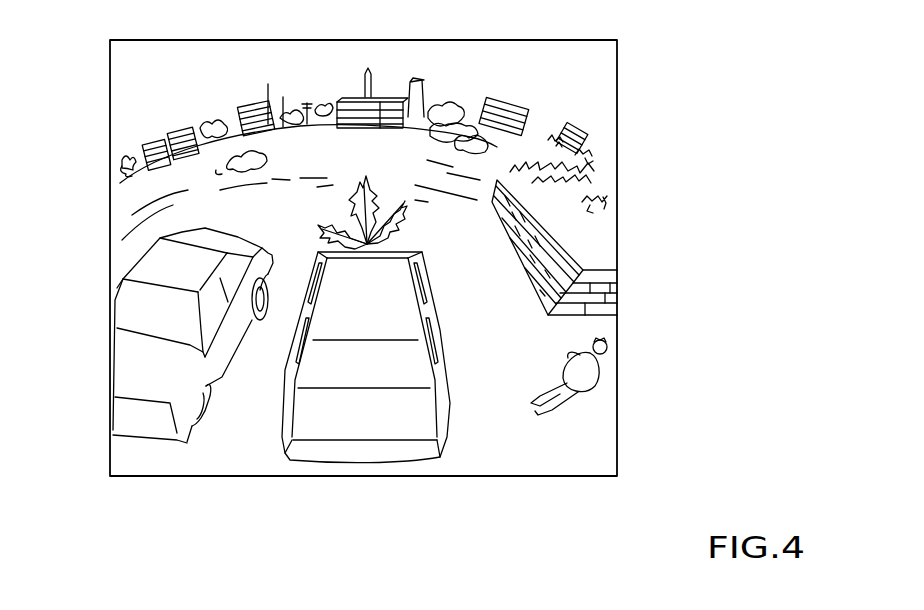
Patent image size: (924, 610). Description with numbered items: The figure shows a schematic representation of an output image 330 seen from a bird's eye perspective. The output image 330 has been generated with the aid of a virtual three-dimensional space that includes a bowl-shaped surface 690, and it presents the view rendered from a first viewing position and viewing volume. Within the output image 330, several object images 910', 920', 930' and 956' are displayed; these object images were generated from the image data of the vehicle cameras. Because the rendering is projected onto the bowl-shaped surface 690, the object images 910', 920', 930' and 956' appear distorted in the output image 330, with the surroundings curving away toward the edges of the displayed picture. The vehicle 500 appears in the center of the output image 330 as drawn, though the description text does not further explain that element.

The output image 330 is at (577, 87).
The object image 910' is at (365, 194).
The object image 920' is at (605, 247).
The object image 930' is at (625, 376).
The object image 956' is at (154, 340).
The own vehicle 500 is at (275, 425).
The surface 690 is at (471, 468).